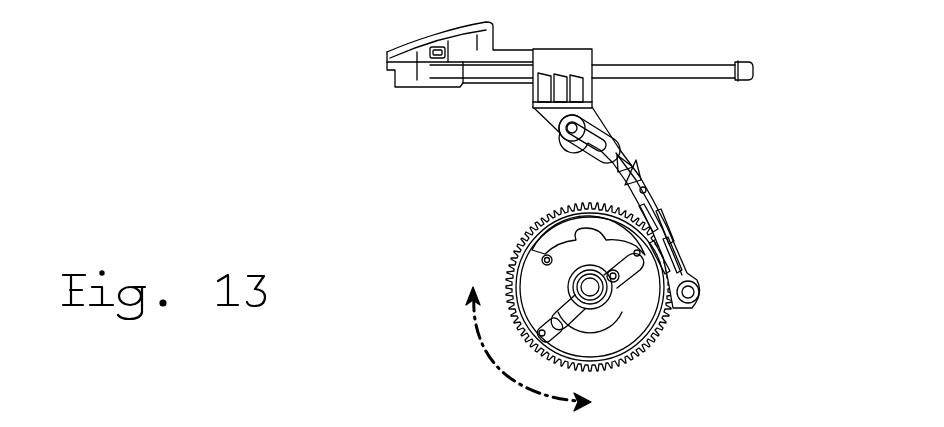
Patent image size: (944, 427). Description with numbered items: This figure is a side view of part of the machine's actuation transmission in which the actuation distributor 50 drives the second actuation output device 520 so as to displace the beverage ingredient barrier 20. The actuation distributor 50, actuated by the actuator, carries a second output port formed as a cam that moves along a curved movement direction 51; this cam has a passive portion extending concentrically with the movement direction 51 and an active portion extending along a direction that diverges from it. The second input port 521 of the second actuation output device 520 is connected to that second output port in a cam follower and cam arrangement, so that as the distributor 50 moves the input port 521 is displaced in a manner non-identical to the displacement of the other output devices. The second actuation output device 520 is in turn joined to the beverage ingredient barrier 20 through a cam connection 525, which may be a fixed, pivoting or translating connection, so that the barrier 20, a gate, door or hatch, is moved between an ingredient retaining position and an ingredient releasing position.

The beverage ingredient barrier 20 is at (525, 53).
The second actuation output device 520 is at (677, 170).
The cam connection 525 is at (600, 130).
The second input port 521 is at (611, 270).
The actuation distributor 50 is at (528, 235).
The movement direction 51 is at (492, 360).